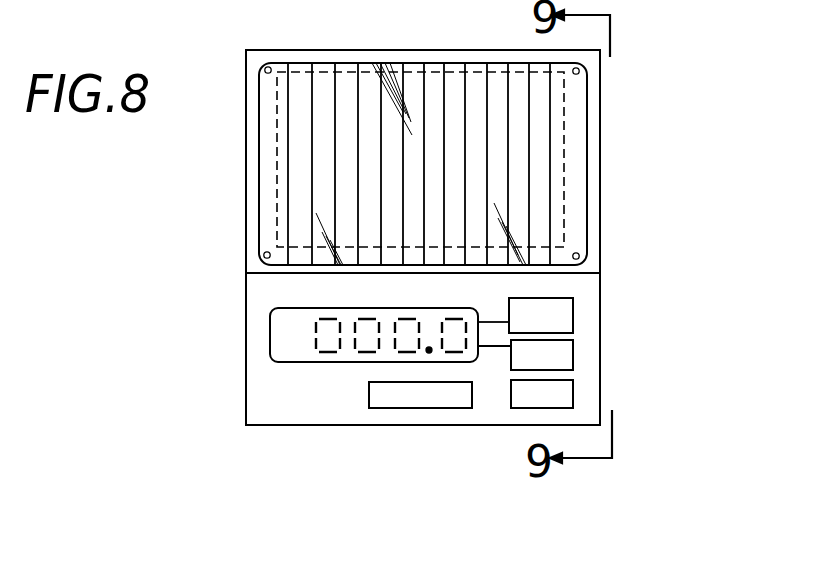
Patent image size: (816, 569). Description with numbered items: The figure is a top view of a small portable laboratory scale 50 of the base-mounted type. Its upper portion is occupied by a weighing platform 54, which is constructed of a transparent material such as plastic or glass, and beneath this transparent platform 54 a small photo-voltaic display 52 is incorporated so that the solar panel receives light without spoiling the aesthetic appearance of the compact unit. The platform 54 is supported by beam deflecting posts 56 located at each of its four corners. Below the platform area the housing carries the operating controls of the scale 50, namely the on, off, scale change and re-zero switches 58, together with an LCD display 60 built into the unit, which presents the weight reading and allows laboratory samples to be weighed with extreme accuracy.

The small portable laboratory scale 50 is at (602, 98).
The photo-voltaic display 52 is at (566, 178).
The weighing platform 54 is at (587, 229).
The beam deflecting posts 56 is at (269, 66).
The switches 58 is at (573, 389).
The LCD display 60 is at (325, 362).